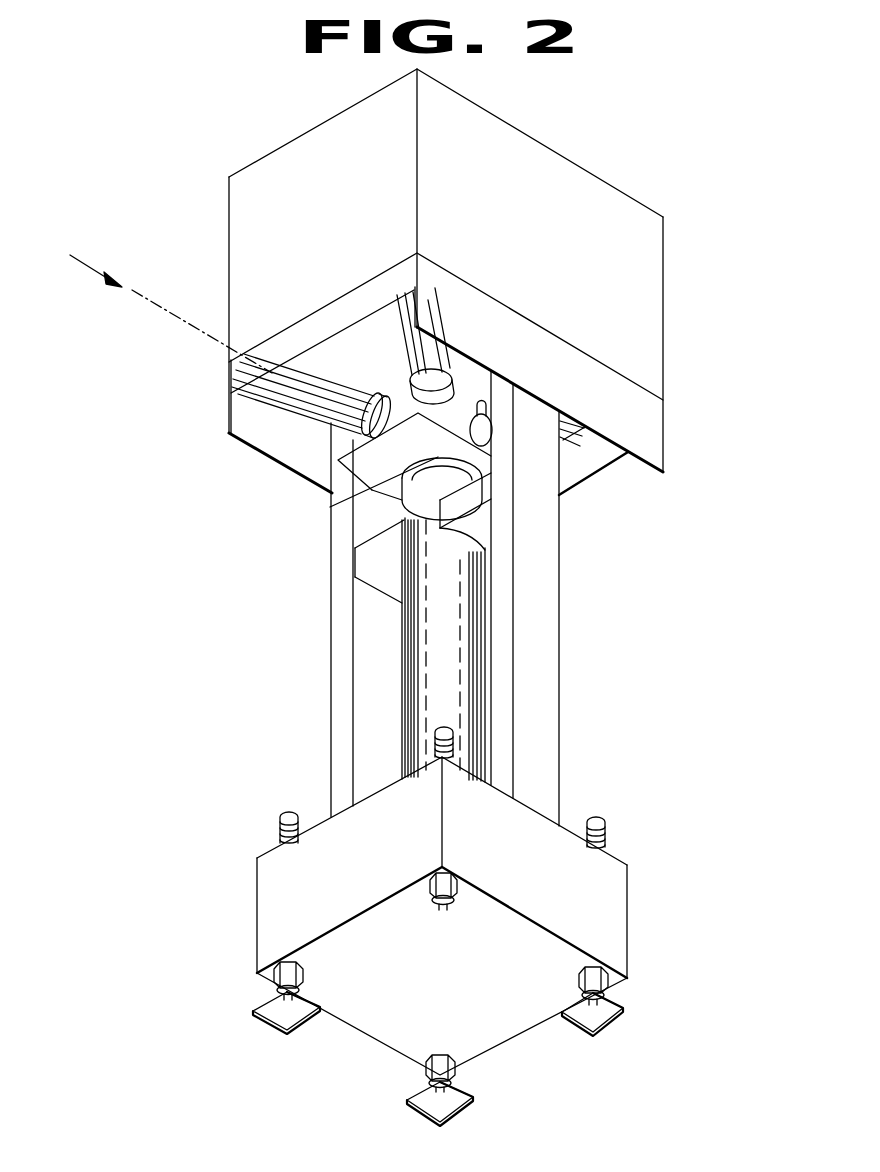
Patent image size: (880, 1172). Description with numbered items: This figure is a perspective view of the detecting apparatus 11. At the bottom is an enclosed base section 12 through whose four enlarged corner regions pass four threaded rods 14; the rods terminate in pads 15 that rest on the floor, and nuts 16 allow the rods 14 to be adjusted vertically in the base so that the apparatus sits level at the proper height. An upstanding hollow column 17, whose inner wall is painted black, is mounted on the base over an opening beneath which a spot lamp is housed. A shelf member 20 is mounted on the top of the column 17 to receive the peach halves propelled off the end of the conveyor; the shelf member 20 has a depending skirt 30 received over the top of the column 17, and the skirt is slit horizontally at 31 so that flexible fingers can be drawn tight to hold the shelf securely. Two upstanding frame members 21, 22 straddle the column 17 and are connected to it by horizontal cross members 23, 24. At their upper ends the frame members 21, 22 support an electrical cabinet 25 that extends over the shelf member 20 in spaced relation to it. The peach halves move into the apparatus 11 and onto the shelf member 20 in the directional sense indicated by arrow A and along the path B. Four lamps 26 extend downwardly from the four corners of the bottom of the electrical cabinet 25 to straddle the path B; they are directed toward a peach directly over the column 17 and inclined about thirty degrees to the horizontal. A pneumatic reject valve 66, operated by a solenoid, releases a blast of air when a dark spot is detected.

The detecting apparatus 11 is at (656, 195).
The electrical cabinet 25 is at (664, 292).
The lamps 26 is at (412, 346).
The shelf member 20 is at (355, 452).
The pneumatic reject valve 66 is at (486, 426).
The horizontal slit 31 is at (470, 462).
The depending skirt 30 is at (404, 500).
The horizontal cross member 24 is at (480, 517).
The horizontal cross member 23 is at (368, 553).
The upstanding frame member 22 is at (540, 555).
The upstanding frame member 21 is at (343, 603).
The hollow column 17 is at (468, 666).
The threaded rods 14 is at (435, 735).
The base section 12 is at (626, 919).
The nuts 16 is at (428, 900).
The pads 15 is at (428, 931).
The arrow A is at (88, 264).
The path B is at (147, 300).